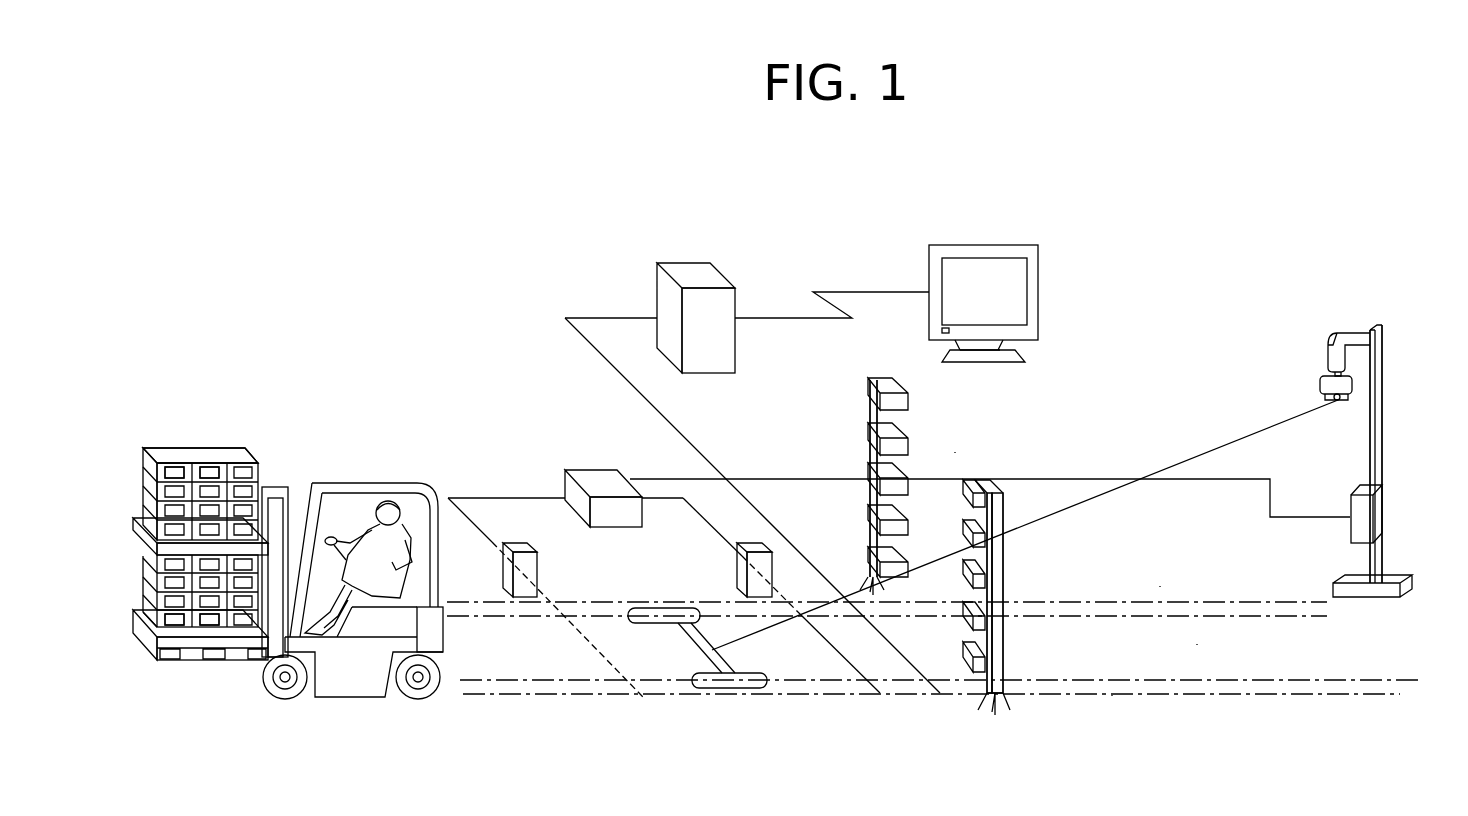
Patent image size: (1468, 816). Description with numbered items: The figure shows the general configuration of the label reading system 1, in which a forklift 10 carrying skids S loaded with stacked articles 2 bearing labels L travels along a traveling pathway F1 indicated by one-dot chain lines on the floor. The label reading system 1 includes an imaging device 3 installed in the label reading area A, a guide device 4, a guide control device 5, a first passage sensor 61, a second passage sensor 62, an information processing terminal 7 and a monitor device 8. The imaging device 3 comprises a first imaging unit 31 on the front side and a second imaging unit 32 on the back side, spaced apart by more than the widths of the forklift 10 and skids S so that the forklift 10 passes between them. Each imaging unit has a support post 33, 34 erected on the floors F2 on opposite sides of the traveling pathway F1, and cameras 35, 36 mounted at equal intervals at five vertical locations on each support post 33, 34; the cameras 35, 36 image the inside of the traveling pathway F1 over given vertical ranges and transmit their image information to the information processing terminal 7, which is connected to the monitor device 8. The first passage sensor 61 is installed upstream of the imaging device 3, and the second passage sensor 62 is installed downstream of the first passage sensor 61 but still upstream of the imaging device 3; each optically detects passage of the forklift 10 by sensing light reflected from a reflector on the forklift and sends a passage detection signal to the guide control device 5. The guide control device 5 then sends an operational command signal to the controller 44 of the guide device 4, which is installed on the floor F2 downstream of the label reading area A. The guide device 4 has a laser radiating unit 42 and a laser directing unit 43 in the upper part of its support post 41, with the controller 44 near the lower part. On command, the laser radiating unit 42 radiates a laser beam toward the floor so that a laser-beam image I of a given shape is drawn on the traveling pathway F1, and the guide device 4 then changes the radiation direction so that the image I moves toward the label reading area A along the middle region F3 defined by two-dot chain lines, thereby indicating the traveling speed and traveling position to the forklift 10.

The label reading system 1 is at (528, 297).
The article (package) 2 is at (233, 460).
The label L is at (245, 470).
The skid S is at (189, 434).
The forklift 10 is at (382, 473).
The guide control device 5 is at (578, 470).
The information processing terminal 7 is at (690, 263).
The monitor device 8 is at (1000, 245).
The first passage sensor 61 is at (540, 545).
The second passage sensor 62 is at (745, 565).
The laser-beam image I is at (688, 640).
The second imaging unit 32 is at (855, 459).
The support post 34 is at (872, 414).
The cameras 36 is at (905, 440).
The imaging device 3 is at (1028, 556).
The first imaging unit 31 is at (1014, 569).
The support post 33 is at (997, 540).
The cameras 35 is at (980, 478).
The label reading area A is at (964, 447).
The traveling pathway F1 is at (1117, 705).
The floor F2 is at (1166, 580).
The middle region F3 is at (1205, 640).
The guide device 4 is at (1393, 383).
The support post 41 is at (1382, 446).
The laser radiating unit 42 is at (1337, 405).
The laser directing unit 43 is at (1330, 360).
The controller 44 is at (1380, 513).